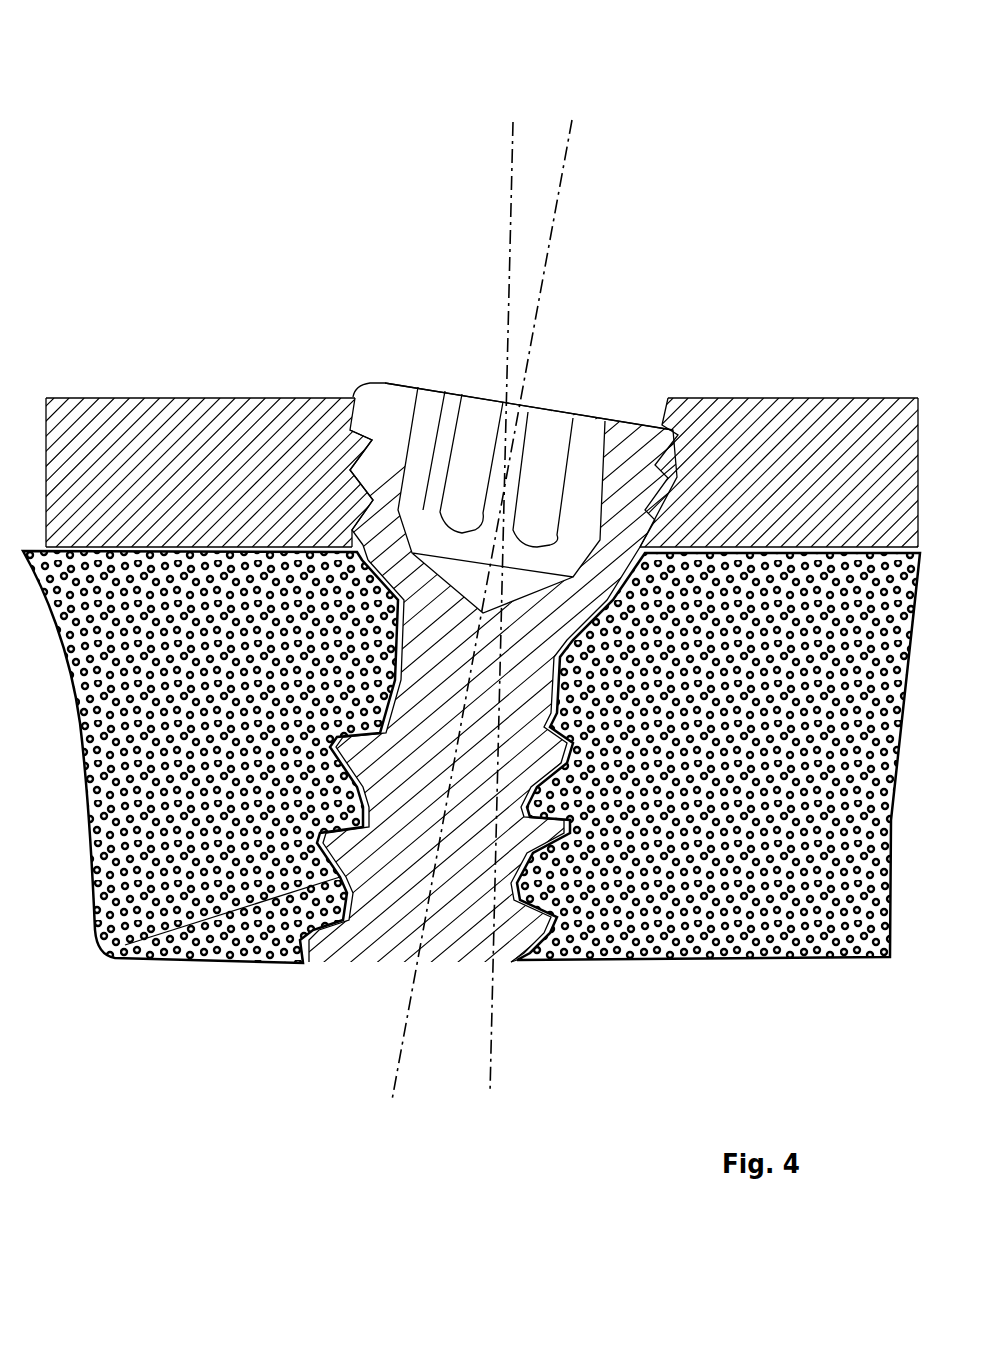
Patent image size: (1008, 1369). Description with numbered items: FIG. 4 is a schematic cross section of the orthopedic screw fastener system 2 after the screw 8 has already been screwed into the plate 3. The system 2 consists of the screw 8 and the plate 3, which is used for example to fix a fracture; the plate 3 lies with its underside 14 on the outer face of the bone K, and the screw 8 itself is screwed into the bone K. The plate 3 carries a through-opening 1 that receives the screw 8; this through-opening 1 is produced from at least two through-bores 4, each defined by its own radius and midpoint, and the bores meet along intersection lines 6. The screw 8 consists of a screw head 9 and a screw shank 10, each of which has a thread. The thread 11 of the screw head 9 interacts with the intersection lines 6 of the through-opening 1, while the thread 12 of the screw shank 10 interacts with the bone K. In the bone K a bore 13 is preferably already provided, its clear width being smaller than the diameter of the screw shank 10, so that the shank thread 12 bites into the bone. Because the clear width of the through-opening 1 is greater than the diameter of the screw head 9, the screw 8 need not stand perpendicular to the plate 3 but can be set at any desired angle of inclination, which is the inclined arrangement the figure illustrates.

The through-opening 1 is at (504, 674).
The orthopedic screw fastener system 2 is at (504, 588).
The plate 3 is at (782, 432).
The through-bore 4 is at (346, 412).
The intersection lines 6 is at (347, 405).
The screw 8 is at (407, 398).
The screw head 9 is at (560, 410).
The screw shank 10 is at (515, 932).
The thread of the screw head 11 is at (352, 452).
The thread of the screw shank 12 is at (380, 932).
The bore 13 is at (300, 930).
The underside 14 is at (853, 565).
The bone K is at (125, 945).